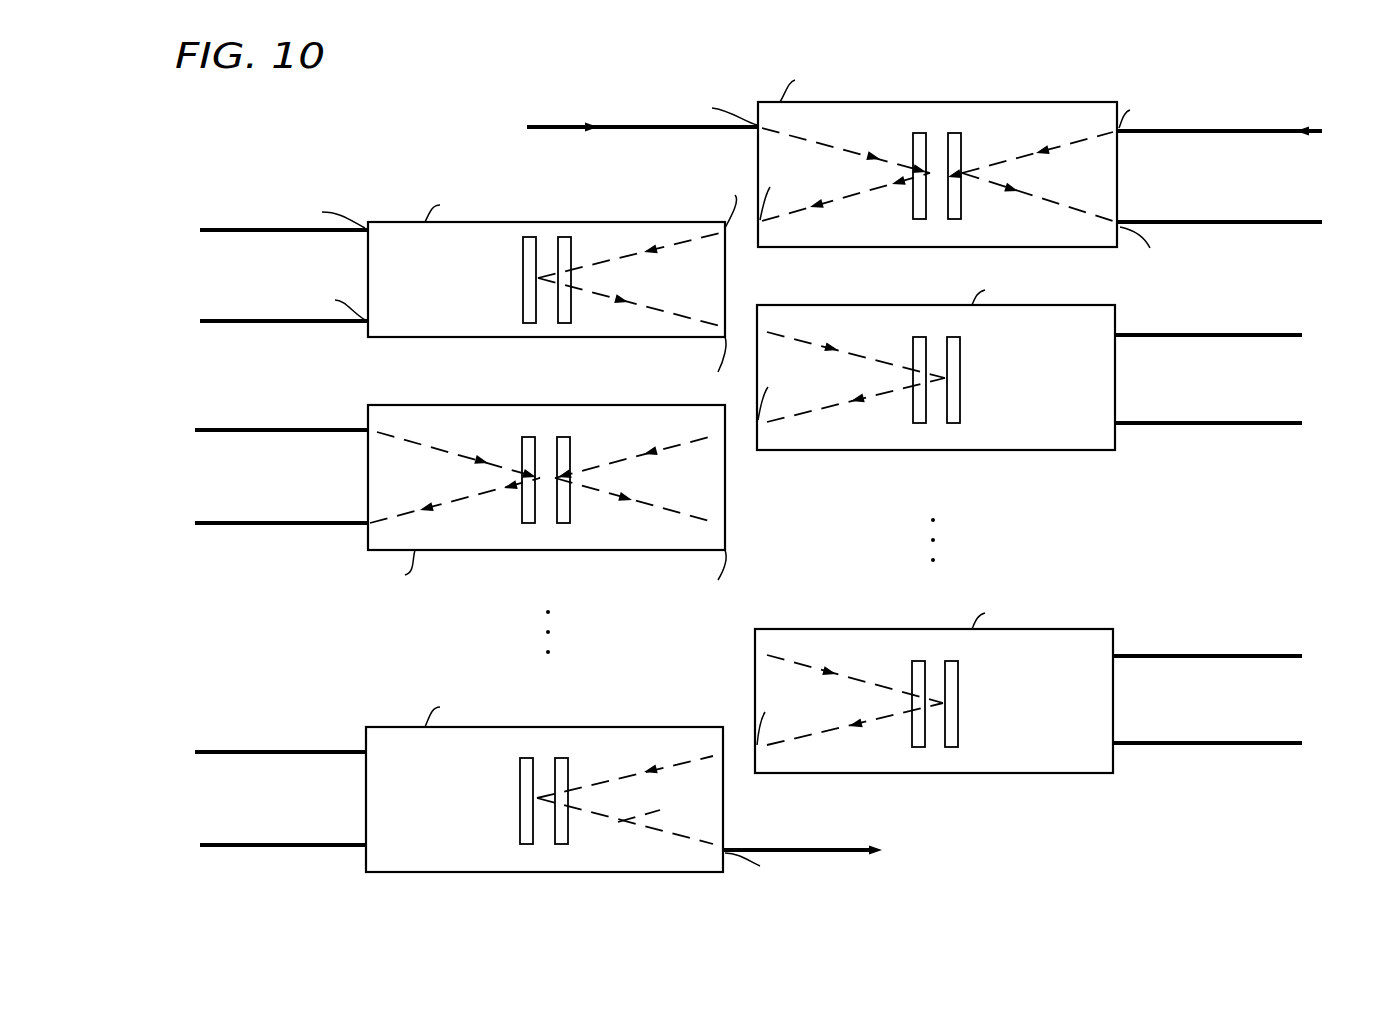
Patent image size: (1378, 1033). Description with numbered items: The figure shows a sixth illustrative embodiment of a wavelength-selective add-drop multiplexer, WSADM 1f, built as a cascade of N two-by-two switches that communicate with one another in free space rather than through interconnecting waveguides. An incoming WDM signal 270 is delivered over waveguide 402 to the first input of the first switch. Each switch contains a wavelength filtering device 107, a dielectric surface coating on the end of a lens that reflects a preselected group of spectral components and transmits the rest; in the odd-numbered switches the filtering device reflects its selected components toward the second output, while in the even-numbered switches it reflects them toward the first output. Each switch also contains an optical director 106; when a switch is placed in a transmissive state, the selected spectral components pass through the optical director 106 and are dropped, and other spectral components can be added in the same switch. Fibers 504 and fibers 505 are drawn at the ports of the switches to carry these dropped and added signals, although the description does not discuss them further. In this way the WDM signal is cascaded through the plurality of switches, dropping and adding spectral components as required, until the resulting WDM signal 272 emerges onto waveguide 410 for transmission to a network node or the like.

The WSADM 1f is at (172, 168).
The input/output fiber 504 is at (254, 229).
The output fiber 505 is at (248, 320).
The optical director 106 is at (956, 132).
The wavelength filtering device 107 is at (919, 132).
The WDM signal 270 is at (592, 124).
The WDM signal 272 is at (878, 858).
The waveguide 402 is at (632, 125).
The waveguide 410 is at (772, 848).